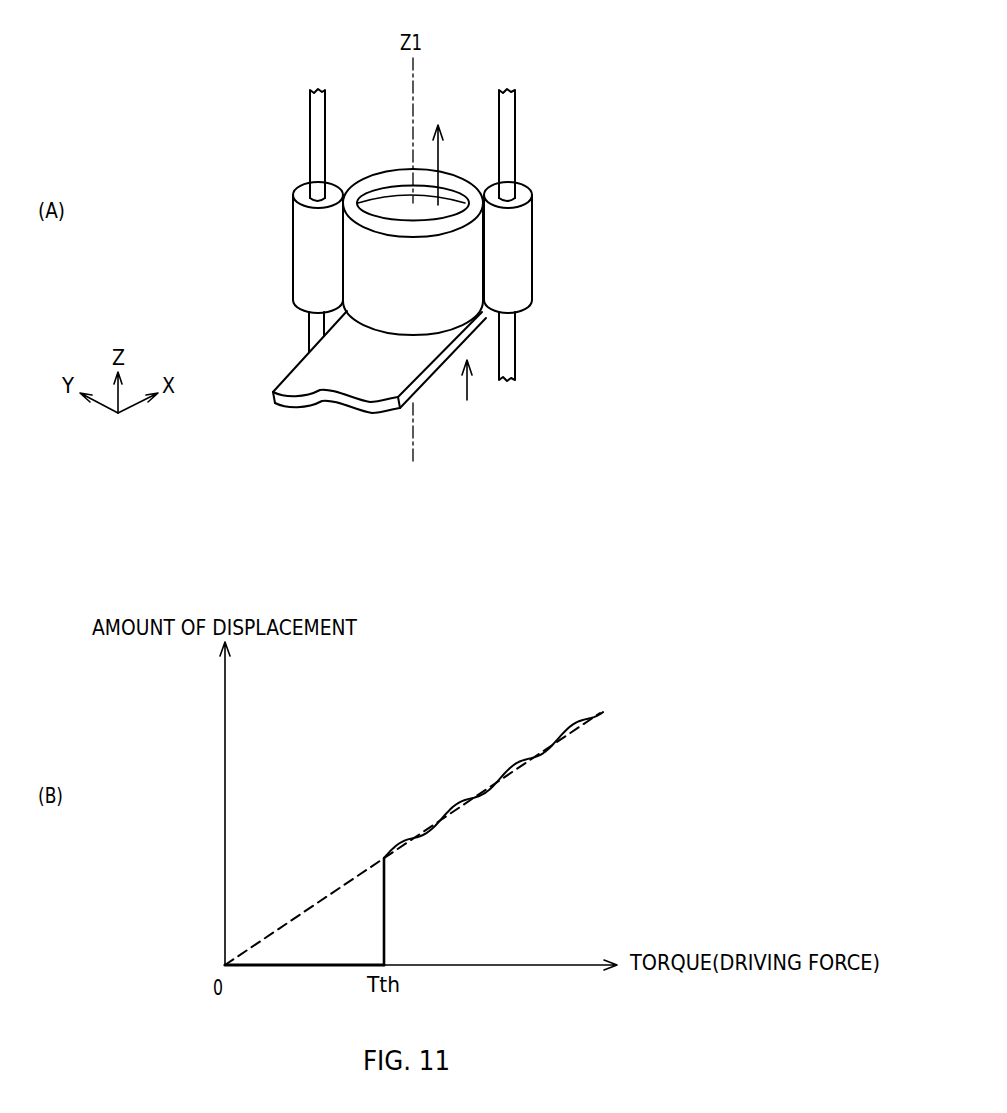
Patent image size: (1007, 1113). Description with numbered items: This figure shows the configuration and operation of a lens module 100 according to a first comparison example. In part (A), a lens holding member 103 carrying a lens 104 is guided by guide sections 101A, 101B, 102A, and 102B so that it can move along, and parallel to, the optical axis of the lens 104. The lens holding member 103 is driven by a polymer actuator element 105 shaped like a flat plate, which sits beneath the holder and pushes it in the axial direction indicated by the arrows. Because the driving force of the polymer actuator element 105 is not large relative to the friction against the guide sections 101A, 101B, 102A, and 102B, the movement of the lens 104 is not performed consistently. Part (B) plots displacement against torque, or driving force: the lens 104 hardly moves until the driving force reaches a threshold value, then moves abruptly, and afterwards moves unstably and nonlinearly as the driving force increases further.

The lens module 100 is at (559, 69).
The guide section 101A is at (309, 132).
The guide section 101B is at (512, 128).
The guide section 102A is at (313, 238).
The guide section 102B is at (512, 238).
The lens holding member 103 is at (395, 282).
The lens 104 is at (377, 205).
The polymer actuator element 105 is at (337, 378).